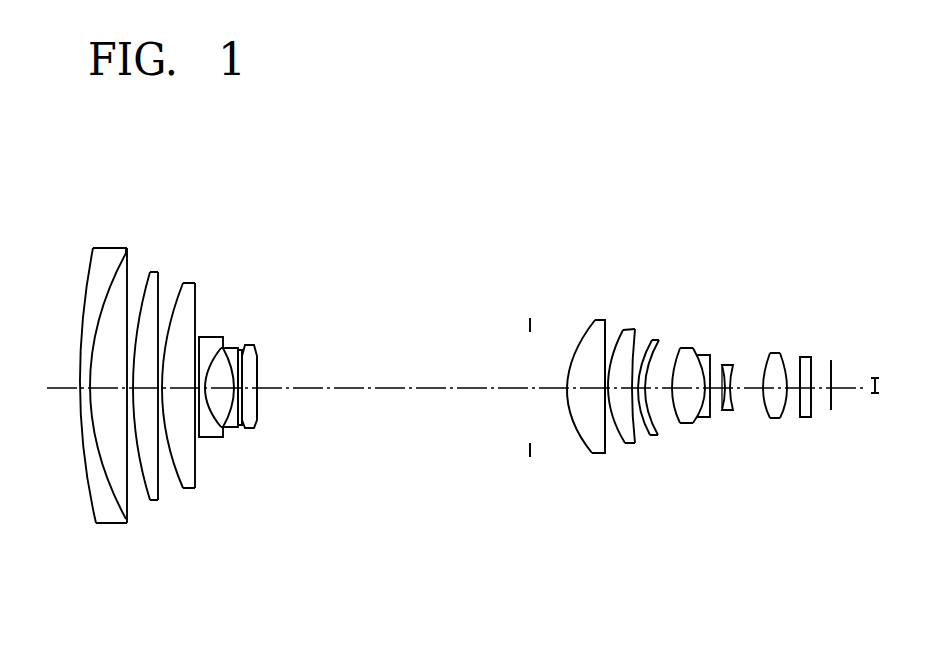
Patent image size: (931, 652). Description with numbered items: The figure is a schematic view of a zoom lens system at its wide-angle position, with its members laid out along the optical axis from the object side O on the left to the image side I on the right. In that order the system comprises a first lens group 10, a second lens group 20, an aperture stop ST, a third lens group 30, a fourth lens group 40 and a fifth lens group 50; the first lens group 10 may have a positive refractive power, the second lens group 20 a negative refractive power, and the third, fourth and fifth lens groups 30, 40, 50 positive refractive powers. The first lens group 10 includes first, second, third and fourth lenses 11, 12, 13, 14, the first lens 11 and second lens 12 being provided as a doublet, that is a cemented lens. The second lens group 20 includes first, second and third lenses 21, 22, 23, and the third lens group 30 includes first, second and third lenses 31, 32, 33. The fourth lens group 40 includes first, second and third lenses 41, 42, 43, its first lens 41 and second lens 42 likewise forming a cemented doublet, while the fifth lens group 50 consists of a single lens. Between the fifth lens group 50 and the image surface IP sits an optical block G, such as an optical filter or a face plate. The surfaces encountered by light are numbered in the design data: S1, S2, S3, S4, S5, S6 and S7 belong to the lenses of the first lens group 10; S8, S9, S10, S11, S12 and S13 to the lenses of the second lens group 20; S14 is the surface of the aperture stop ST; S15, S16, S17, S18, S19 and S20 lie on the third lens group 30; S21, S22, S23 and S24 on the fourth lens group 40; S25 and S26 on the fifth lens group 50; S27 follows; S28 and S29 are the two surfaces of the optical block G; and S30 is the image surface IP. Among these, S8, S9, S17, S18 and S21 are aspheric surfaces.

The first lens group 10 is at (100, 190).
The first lens 11 is at (110, 258).
The second lens 12 is at (126, 272).
The third lens 13 is at (155, 272).
The fourth lens 14 is at (186, 285).
The second lens group 20 is at (285, 265).
The first lens 21 is at (218, 337).
The second lens 22 is at (238, 350).
The third lens 23 is at (249, 345).
The third lens group 30 is at (582, 271).
The first lens 31 is at (597, 321).
The second lens 32 is at (624, 330).
The third lens 33 is at (652, 340).
The fourth lens group 40 is at (673, 302).
The first lens 41 is at (684, 348).
The second lens 42 is at (705, 355).
The third lens 43 is at (727, 365).
The fifth lens group 50 is at (775, 352).
The optical block G is at (805, 356).
The image surface IP is at (831, 360).
The aperture stop ST is at (527, 325).
The object side O is at (447, 388).
The image side I is at (875, 385).
The surface S1 is at (89, 488).
The surface S2 is at (110, 490).
The surface S3 is at (130, 500).
The surface S4 is at (157, 489).
The surface S5 is at (182, 491).
The surface S6 is at (190, 490).
The surface S7 is at (197, 470).
The aspheric surface S8 is at (200, 438).
The aspheric surface S9 is at (219, 437).
The surface S10 is at (240, 428).
The surface S11 is at (245, 350).
The surface S12 is at (257, 362).
The surface S13 is at (258, 376).
The aperture stop surface S14 is at (528, 450).
The surface S15 is at (588, 452).
The surface S16 is at (605, 454).
The aspheric surface S17 is at (622, 446).
The aspheric surface S18 is at (650, 440).
The surface S19 is at (659, 437).
The surface S20 is at (677, 425).
The aspheric surface S21 is at (690, 424).
The surface S22 is at (706, 419).
The surface S23 is at (733, 411).
The surface S24 is at (768, 418).
The surface S25 is at (784, 418).
The surface S26 is at (801, 418).
The surface S27 is at (810, 418).
The optical block surface S28 is at (814, 378).
The optical block surface S29 is at (820, 380).
The image surface number S30 is at (826, 393).